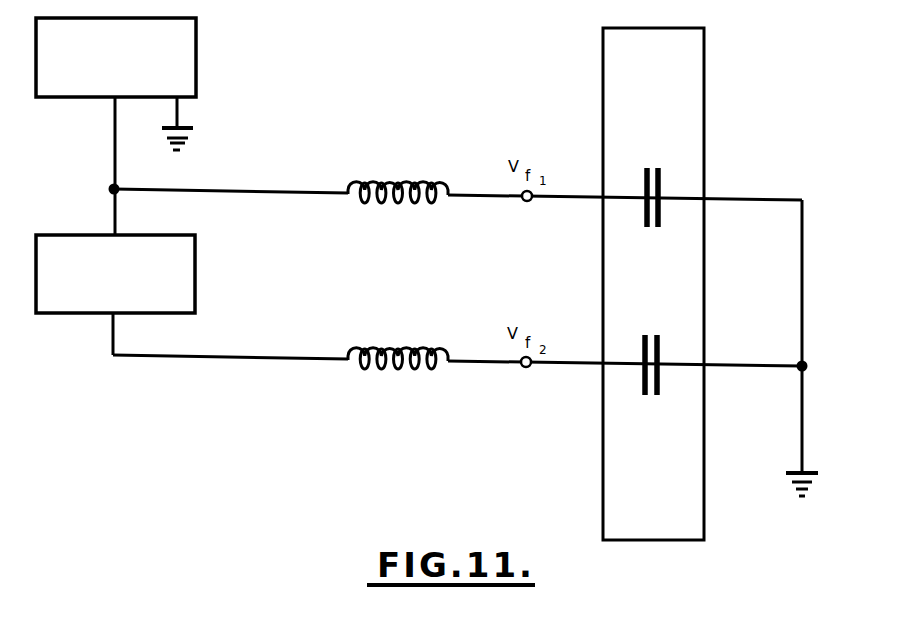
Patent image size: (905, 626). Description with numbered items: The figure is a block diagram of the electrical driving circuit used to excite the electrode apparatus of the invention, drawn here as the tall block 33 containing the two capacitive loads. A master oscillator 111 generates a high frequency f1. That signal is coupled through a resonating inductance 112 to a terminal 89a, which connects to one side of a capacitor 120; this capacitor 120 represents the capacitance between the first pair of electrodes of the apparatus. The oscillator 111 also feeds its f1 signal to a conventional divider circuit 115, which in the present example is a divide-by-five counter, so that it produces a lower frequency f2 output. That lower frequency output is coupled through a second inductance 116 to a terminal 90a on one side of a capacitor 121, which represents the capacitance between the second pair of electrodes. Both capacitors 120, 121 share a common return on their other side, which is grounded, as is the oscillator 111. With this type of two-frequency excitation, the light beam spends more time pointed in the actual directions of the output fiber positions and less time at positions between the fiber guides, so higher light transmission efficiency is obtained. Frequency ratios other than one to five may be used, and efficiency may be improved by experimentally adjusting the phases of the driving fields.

The master oscillator 111 is at (197, 61).
The divider circuit 115 is at (196, 279).
The resonating inductance 112 is at (396, 182).
The inductance 116 is at (396, 349).
The terminal 89a is at (527, 202).
The terminal 90a is at (526, 368).
The capacitive sensing element 33 is at (705, 42).
The capacitor 120 is at (661, 180).
The capacitor 121 is at (660, 346).